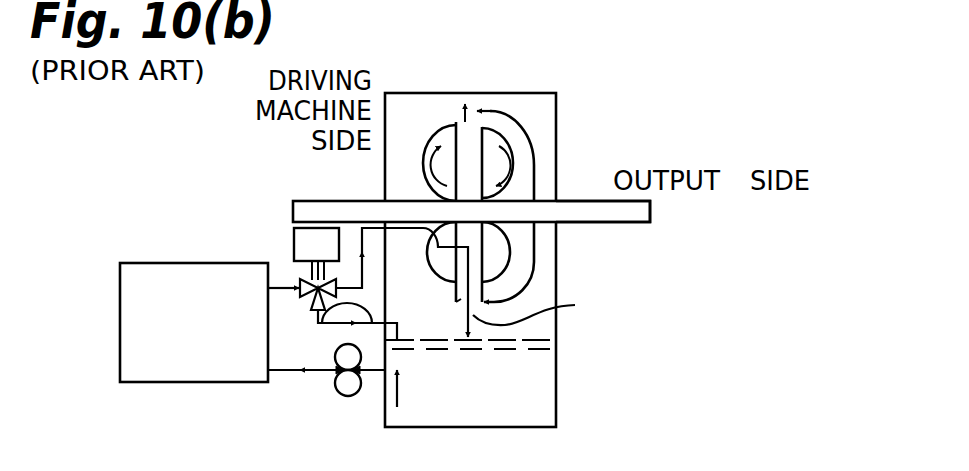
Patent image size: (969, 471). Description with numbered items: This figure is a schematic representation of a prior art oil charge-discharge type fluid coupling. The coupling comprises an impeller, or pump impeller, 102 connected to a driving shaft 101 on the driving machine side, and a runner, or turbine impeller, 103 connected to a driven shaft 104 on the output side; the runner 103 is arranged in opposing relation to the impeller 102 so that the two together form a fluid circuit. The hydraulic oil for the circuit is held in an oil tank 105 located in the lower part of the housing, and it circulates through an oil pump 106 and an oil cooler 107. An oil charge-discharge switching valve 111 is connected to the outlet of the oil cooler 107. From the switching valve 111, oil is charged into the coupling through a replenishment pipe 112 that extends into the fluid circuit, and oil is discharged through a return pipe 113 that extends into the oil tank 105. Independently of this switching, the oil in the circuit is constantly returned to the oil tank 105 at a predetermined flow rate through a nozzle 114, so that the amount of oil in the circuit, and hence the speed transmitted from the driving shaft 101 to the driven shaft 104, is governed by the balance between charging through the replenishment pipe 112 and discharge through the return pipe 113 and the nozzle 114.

The driving shaft 101 is at (345, 208).
The impeller 102 is at (434, 132).
The runner 103 is at (503, 128).
The driven shaft 104 is at (582, 200).
The oil tank 105 is at (526, 428).
The oil pump 106 is at (346, 397).
The oil cooler 107 is at (170, 383).
The oil charge-discharge switching valve 111 is at (303, 283).
The replenishment pipe 112 is at (365, 275).
The return pipe 113 is at (320, 323).
The nozzle 114 is at (542, 312).